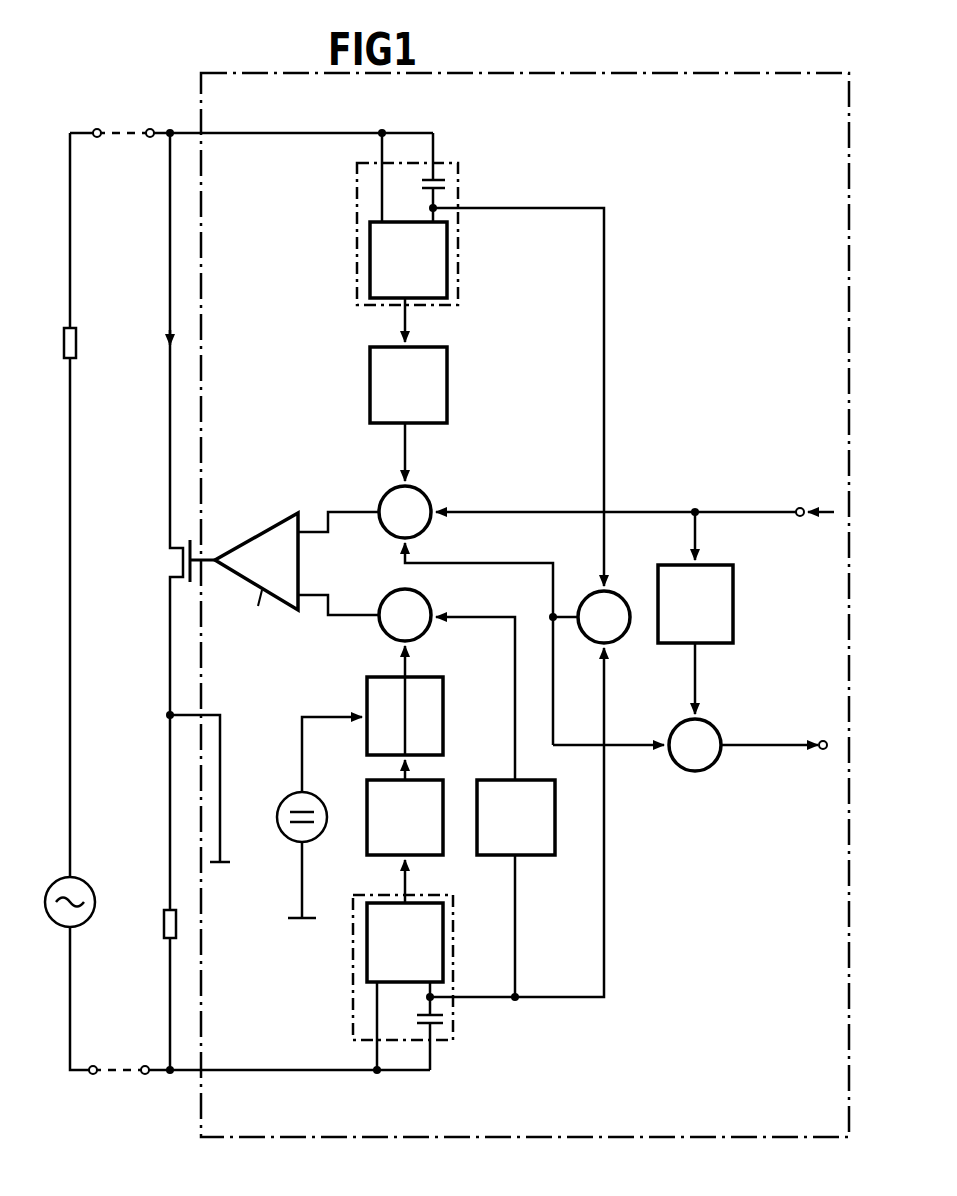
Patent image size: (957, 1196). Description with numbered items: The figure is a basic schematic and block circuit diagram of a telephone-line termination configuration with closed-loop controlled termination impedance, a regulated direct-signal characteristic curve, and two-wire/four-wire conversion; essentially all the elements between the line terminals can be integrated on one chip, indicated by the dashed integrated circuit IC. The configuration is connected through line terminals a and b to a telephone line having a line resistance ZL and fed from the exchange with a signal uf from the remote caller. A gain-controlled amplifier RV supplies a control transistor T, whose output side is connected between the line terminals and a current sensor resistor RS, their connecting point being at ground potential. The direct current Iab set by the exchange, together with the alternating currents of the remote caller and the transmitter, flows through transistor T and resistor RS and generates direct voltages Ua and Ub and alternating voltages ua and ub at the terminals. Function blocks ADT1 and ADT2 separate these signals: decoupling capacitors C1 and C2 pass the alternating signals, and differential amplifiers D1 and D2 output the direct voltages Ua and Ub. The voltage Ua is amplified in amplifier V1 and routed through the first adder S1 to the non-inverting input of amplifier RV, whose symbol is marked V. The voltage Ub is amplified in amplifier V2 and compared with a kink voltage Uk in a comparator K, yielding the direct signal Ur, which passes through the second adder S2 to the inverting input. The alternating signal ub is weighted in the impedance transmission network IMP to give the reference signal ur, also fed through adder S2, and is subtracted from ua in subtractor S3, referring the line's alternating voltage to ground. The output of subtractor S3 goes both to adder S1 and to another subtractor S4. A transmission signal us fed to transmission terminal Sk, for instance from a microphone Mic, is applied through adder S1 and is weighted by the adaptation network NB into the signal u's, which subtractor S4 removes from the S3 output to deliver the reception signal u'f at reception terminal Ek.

The integrated circuit IC is at (680, 72).
The line terminal a is at (126, 116).
The line terminal b is at (123, 1086).
The line resistance ZL is at (86, 346).
The signal from remote caller uf is at (87, 882).
The direct current Iab is at (235, 349).
The current sensor resistor RS is at (183, 925).
The control transistor T is at (200, 544).
The amplifier V is at (256, 561).
The gain-controlled amplifier RV is at (250, 612).
The first function block ADT1 is at (357, 245).
The subtractor or differential amplifier D1 is at (408, 215).
The decoupling capacitor C1 is at (420, 177).
The alternating voltage signal ua is at (509, 207).
The direct voltage signal Ua is at (405, 318).
The amplifier V1 is at (408, 385).
The first adder S1 is at (405, 512).
The second adder S2 is at (405, 615).
The subtractor S3 is at (604, 628).
The other subtractor S4 is at (684, 738).
The transmission signal us is at (739, 511).
The transmission terminal Sk is at (808, 494).
The microphone Mic is at (818, 537).
The adaptation network NB is at (695, 604).
The alternating voltage signal u's is at (715, 678).
The reception terminal Ek is at (777, 728).
The reception signal u'f is at (765, 766).
The direct signal Ur is at (423, 697).
The reference signal ur is at (492, 616).
The comparator K is at (405, 716).
The trip or kink voltage Uk is at (302, 817).
The amplifier V2 is at (405, 807).
The impedance transmission network IMP is at (516, 888).
The direct voltage signal Ub is at (405, 885).
The second function block ADT2 is at (357, 978).
The subtractor or differential amplifier D2 is at (405, 988).
The decoupling capacitor C2 is at (418, 1026).
The alternating voltage signal ub is at (455, 1000).